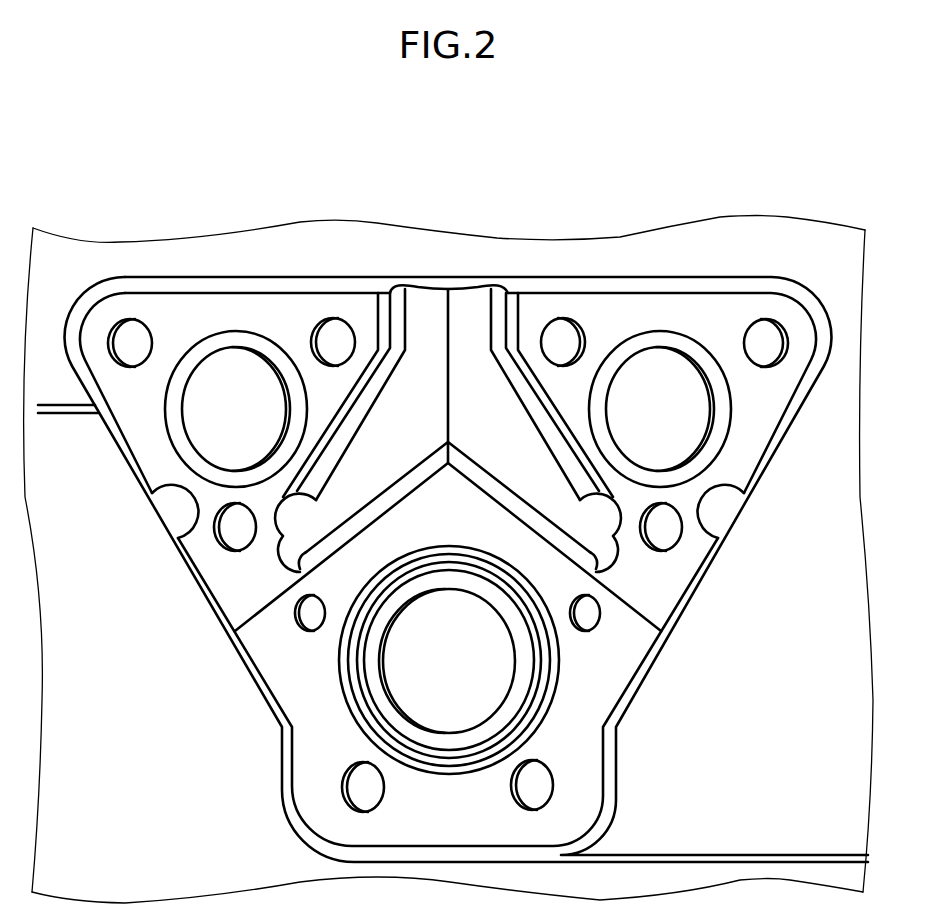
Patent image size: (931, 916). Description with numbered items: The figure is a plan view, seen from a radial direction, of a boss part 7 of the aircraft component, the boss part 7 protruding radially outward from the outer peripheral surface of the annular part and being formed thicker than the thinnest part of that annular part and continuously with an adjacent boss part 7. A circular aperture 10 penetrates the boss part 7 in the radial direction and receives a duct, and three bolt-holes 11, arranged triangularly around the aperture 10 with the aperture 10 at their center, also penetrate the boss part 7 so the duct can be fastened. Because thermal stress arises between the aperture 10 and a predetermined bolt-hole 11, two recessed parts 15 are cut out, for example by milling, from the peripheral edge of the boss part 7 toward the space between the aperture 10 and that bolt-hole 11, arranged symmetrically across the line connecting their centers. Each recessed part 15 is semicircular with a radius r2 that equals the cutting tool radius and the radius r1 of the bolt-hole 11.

The boss part 7 is at (704, 268).
The aperture 10 is at (661, 343).
The bolt-hole 11 is at (448, 489).
The recessed part 15 is at (598, 510).
The radius of the bolt-hole r1 is at (235, 527).
The radius of the recessed part r2 is at (295, 510).